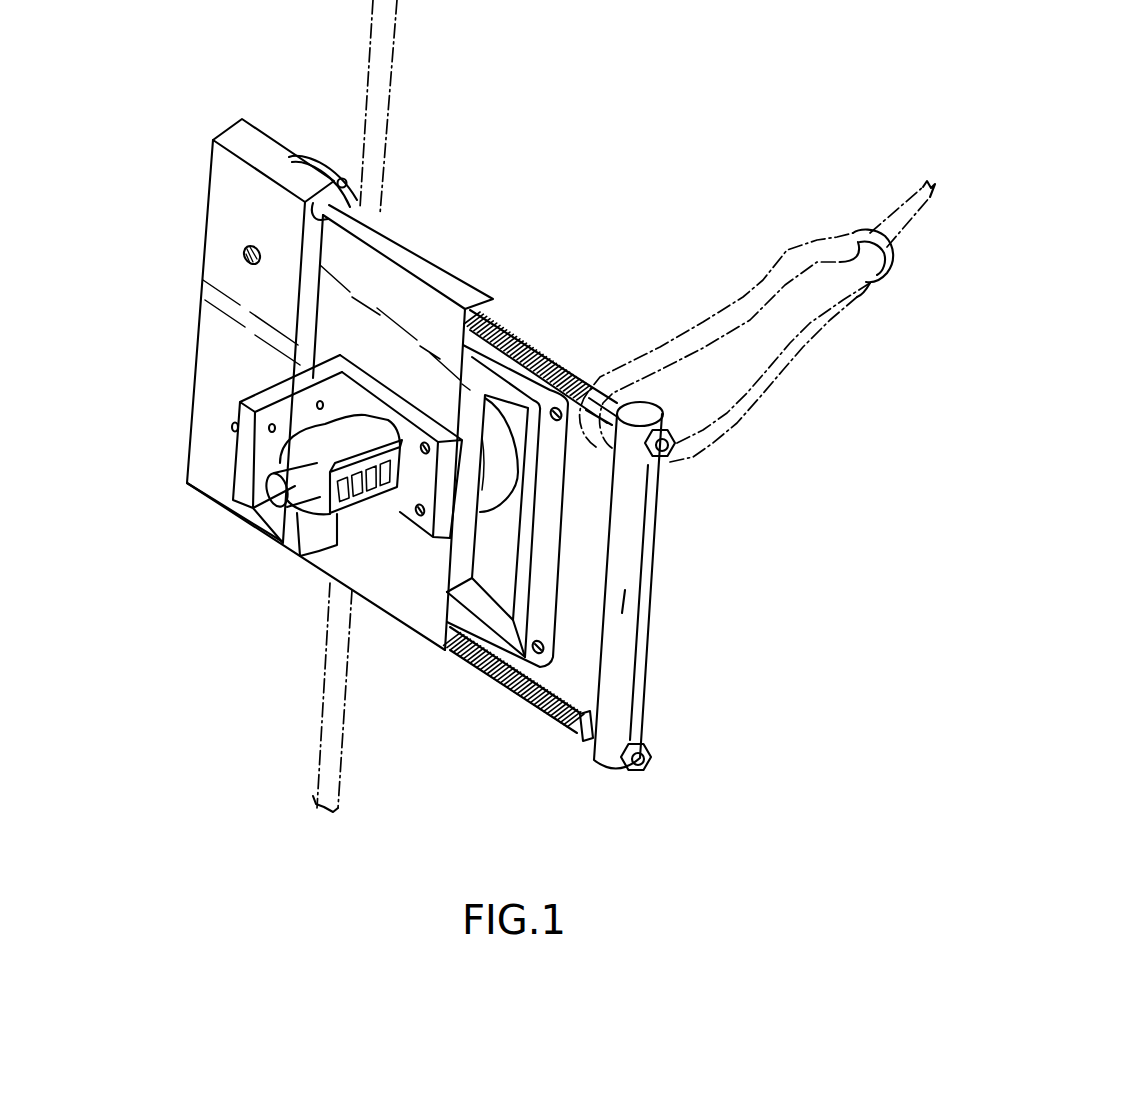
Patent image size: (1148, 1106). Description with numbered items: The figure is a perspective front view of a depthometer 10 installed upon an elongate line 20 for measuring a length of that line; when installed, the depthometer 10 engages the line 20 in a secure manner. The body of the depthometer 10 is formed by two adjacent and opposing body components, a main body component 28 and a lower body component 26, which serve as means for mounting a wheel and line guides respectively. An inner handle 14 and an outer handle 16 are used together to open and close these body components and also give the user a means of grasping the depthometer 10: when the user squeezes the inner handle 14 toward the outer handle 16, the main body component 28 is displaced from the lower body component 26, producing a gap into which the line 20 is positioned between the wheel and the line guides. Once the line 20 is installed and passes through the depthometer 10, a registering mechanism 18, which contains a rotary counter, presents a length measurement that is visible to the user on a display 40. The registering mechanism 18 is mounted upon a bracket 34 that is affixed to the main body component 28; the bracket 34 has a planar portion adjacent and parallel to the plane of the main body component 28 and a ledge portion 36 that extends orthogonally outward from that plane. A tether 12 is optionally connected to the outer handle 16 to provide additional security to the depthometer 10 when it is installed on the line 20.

The depthometer 10 is at (172, 116).
The tether 12 is at (700, 325).
The inner handle 14 is at (533, 481).
The outer handle 16 is at (632, 561).
The registering mechanism 18 is at (341, 508).
The elongate line 20 is at (396, 56).
The lower body component 26 is at (234, 162).
The main body component 28 is at (406, 282).
The bracket 34 is at (400, 402).
The ledge portion 36 is at (252, 411).
The display 40 is at (360, 490).